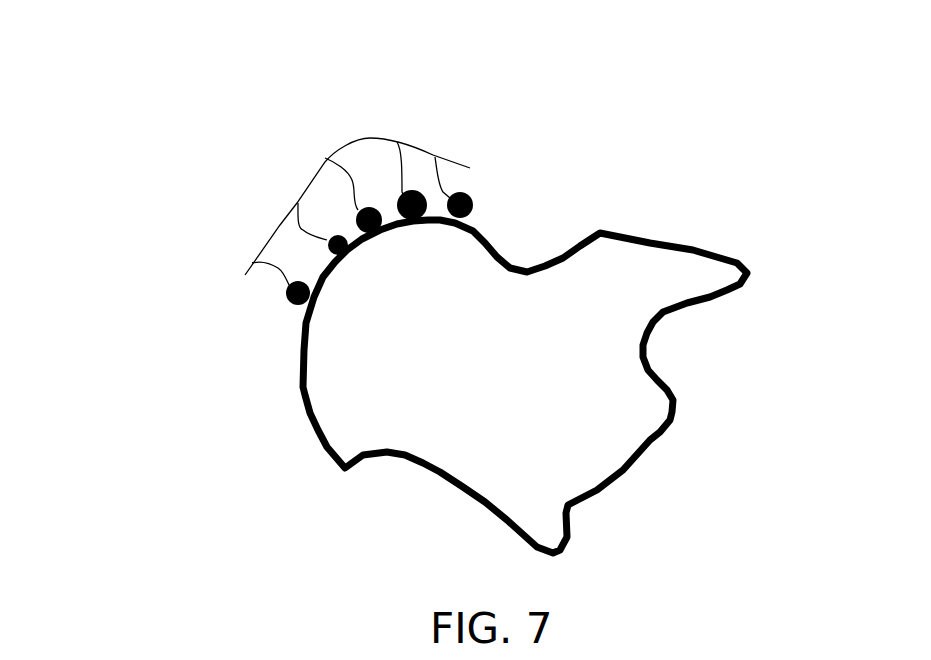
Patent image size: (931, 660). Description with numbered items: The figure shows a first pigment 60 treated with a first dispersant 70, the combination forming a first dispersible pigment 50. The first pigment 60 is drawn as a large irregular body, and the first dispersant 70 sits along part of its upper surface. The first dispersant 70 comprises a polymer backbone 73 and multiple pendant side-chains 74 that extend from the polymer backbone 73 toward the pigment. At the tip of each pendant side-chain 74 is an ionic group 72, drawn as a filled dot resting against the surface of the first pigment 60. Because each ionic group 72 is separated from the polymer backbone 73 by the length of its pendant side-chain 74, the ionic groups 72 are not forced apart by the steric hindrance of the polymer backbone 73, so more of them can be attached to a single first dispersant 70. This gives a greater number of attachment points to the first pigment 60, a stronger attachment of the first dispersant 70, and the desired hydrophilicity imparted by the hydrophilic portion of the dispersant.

The first dispersible pigment 50 is at (717, 530).
The first pigment 60 is at (315, 437).
The first dispersant 70 is at (302, 108).
The ionic group 72 is at (288, 303).
The polymer backbone 73 is at (277, 227).
The pendant side-chain 74 is at (277, 268).